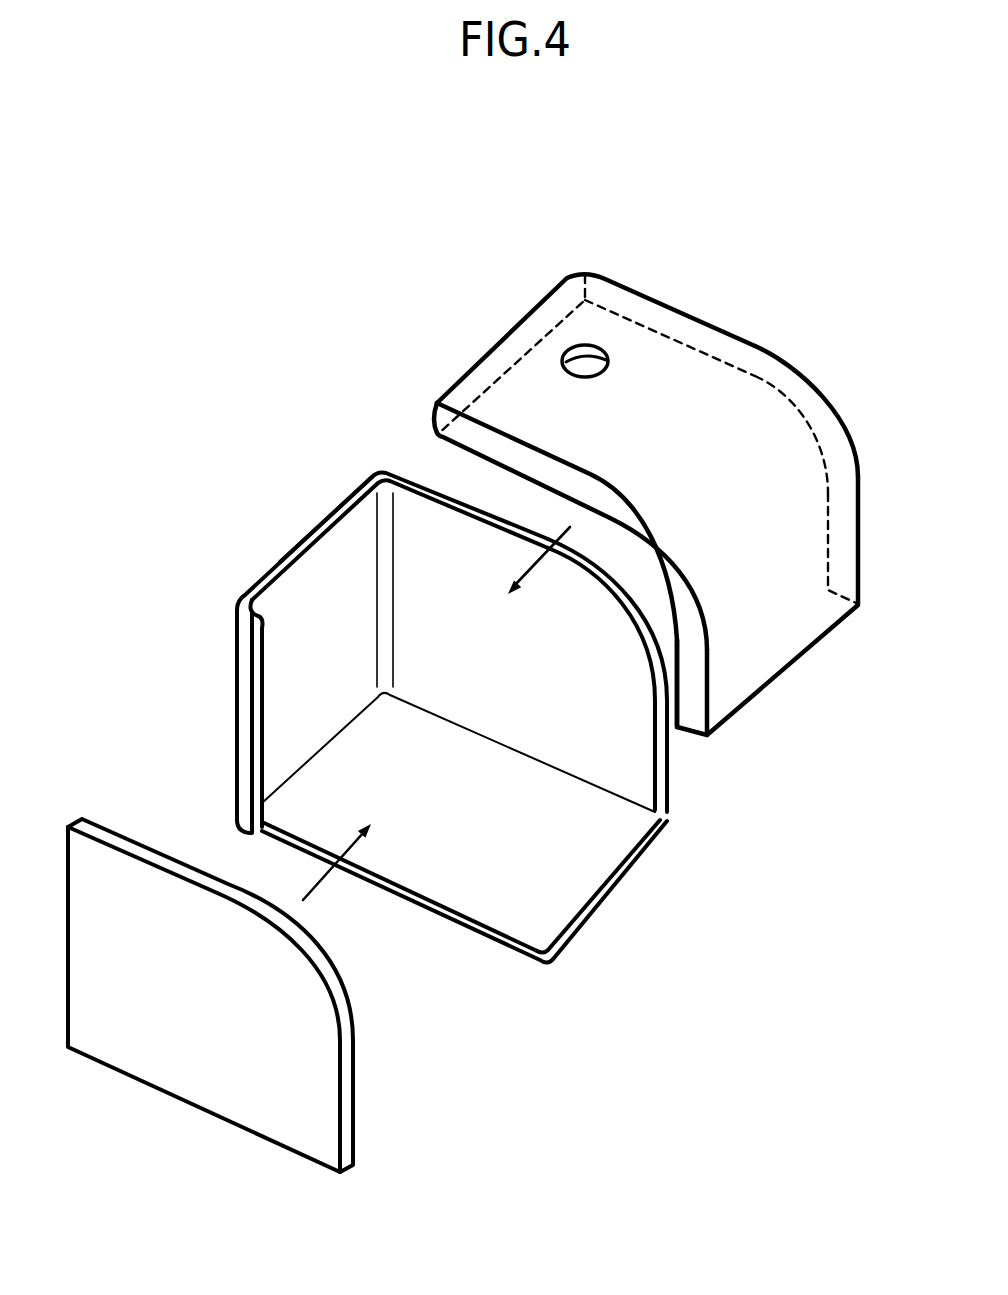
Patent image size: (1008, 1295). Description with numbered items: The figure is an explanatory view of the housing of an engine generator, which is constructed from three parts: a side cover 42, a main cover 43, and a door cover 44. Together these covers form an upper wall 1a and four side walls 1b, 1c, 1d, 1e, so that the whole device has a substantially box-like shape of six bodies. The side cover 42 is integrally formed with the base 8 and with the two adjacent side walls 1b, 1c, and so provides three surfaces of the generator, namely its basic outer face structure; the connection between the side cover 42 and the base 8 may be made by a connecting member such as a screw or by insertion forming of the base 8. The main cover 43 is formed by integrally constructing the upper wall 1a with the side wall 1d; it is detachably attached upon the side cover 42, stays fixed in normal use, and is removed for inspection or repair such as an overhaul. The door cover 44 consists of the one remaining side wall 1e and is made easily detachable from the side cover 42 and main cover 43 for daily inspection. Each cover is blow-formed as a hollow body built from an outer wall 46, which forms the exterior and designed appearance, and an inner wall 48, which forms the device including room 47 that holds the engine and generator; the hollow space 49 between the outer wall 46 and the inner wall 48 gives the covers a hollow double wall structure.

The upper wall 1a is at (690, 366).
The main cover 43 is at (747, 403).
The side wall 1d is at (806, 547).
The side wall 1c is at (597, 650).
The side wall 1b is at (282, 673).
The side wall 1e is at (198, 1039).
The outer wall 46 is at (342, 480).
The hollow space 49 is at (303, 527).
The side cover 42 is at (278, 568).
The inner wall 48 is at (348, 582).
The device including room 47 is at (661, 826).
The base 8 is at (537, 880).
The door cover 44 is at (317, 1063).